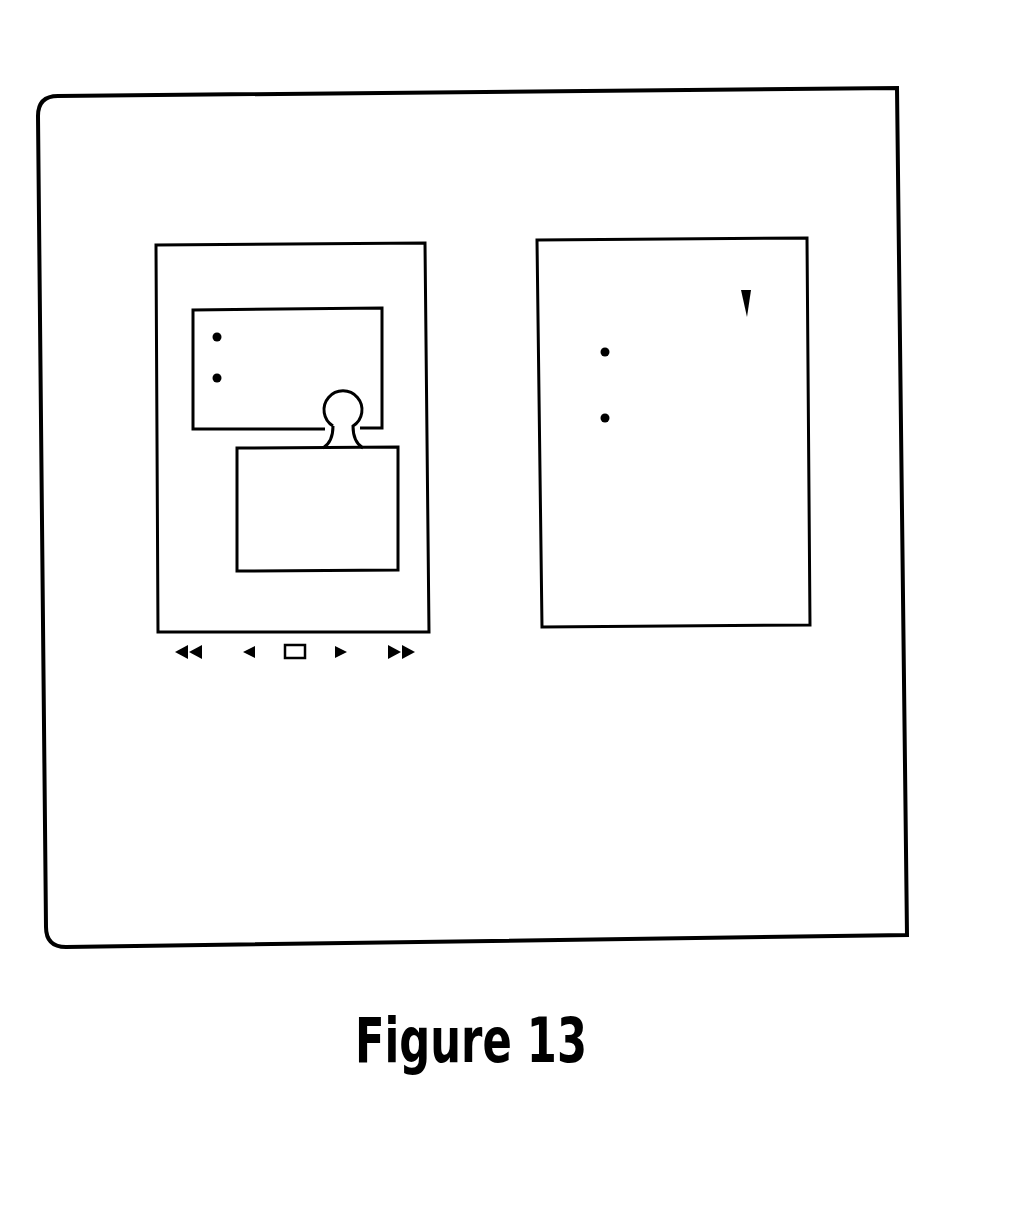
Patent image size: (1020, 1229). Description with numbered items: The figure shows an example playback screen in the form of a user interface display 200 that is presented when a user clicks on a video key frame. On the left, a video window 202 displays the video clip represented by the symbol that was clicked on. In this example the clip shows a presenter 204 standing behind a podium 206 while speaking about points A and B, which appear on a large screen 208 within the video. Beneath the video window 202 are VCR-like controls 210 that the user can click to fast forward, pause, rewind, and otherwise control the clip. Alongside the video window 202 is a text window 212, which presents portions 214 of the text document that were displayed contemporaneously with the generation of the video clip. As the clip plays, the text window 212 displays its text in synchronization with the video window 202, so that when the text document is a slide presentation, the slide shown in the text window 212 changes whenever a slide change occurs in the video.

The user interface display 200 is at (738, 133).
The video window 202 is at (283, 243).
The presenter 204 is at (344, 437).
The podium 206 is at (385, 500).
The large screen 208 is at (222, 308).
The VCR-like controls 210 is at (182, 657).
The text window 212 is at (557, 241).
The portions of the text document 214 is at (710, 312).